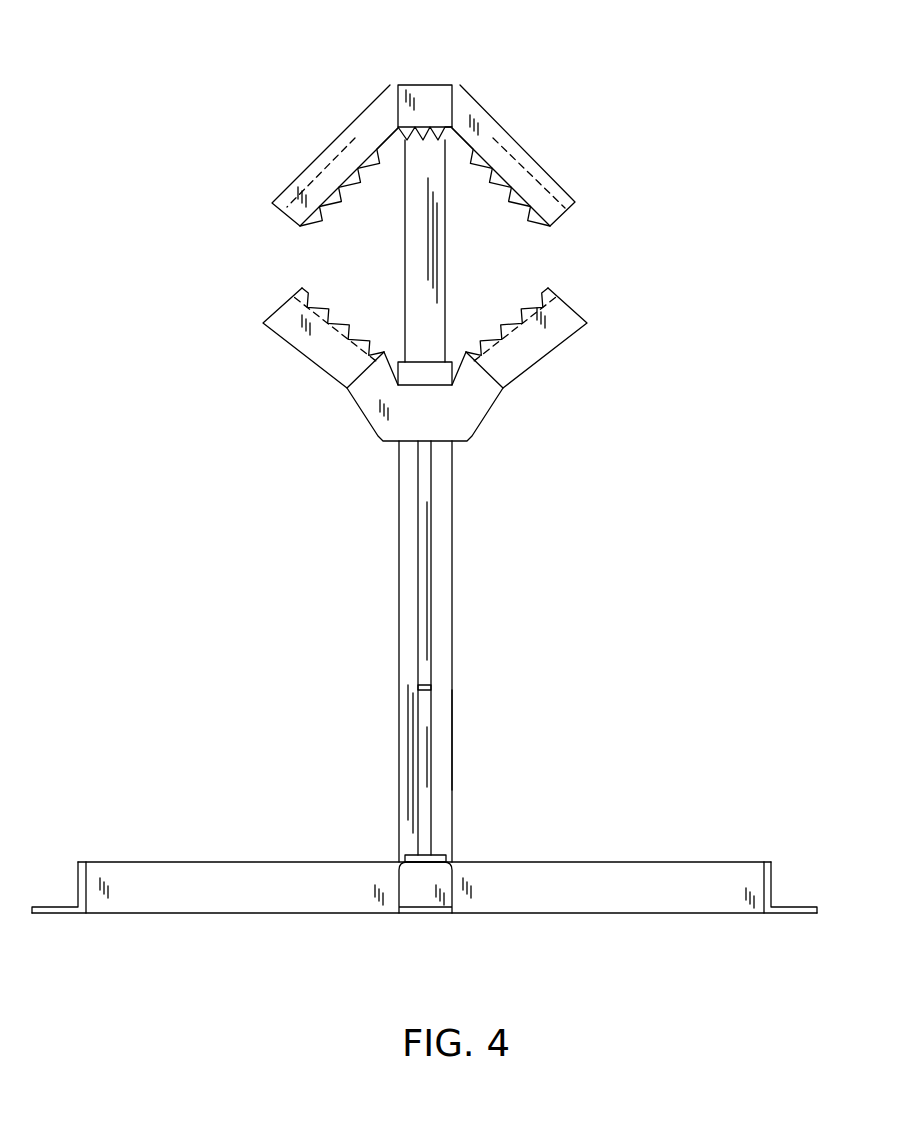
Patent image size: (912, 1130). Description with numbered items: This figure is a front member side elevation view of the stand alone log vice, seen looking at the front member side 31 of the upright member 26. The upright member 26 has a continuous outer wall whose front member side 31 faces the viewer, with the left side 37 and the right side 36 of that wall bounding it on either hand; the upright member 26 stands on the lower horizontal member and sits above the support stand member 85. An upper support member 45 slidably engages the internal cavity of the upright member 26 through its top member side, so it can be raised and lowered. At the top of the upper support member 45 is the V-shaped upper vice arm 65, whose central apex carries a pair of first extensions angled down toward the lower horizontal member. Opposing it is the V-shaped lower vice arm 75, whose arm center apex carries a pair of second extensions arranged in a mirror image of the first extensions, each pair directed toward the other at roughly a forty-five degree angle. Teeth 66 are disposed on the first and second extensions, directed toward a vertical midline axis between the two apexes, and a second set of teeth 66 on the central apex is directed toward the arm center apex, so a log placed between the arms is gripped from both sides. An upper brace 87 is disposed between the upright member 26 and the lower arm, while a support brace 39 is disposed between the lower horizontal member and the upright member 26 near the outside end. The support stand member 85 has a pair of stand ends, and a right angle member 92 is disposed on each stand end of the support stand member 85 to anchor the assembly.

The V-shaped upper vice arm 65 is at (460, 85).
The teeth 66 is at (322, 207).
The upper support member 45 is at (442, 273).
The V-shaped lower vice arm 75 is at (482, 415).
The upper brace 87 is at (427, 555).
The front member side 31 is at (442, 650).
The upright member 26 is at (452, 690).
The right side 36 is at (399, 708).
The left side 37 is at (452, 730).
The support brace 39 is at (427, 775).
The support stand member 85 is at (597, 862).
The right angle member 92 is at (60, 913).